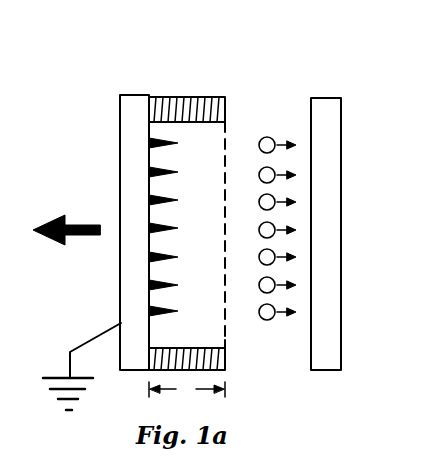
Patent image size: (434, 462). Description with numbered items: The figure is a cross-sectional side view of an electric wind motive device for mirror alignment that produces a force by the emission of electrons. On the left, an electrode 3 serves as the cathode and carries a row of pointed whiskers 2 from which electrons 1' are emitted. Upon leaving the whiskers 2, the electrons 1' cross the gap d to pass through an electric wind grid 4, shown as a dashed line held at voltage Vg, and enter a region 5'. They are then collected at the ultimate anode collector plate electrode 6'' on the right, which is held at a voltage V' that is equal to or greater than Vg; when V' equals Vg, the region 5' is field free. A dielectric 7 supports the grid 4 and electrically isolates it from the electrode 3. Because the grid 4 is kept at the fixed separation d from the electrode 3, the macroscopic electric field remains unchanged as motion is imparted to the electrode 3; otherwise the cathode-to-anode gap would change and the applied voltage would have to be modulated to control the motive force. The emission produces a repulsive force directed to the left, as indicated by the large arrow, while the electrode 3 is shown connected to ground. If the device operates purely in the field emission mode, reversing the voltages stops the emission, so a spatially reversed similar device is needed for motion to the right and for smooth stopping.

The electrons 1' is at (280, 222).
The whiskers 2 is at (180, 146).
The electrode 3 is at (133, 270).
The electric wind grid 4 is at (224, 190).
The region 5' is at (283, 72).
The anode collector plate electrode 6'' is at (354, 234).
The dielectric 7 is at (221, 316).
The gap d is at (187, 390).
The grid voltage Vg is at (229, 335).
The anode voltage V' is at (370, 367).